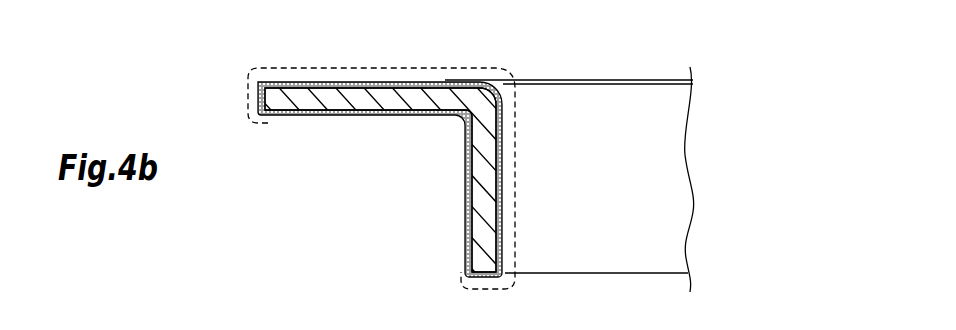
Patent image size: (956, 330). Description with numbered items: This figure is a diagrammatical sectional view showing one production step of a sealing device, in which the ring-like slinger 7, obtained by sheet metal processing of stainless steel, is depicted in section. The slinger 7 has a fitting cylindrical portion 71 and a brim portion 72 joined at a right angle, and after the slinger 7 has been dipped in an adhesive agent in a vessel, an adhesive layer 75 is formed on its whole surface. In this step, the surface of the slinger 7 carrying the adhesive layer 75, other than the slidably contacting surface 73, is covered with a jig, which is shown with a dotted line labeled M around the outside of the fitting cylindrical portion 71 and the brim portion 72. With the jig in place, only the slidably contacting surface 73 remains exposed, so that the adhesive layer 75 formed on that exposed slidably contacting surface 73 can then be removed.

The slinger 7 is at (222, 211).
The fitting cylindrical portion 71 is at (467, 223).
The brim portion 72 is at (328, 102).
The slidably contacting surface 73 is at (467, 210).
The adhesive layer 75 is at (597, 80).
The region M is at (345, 70).